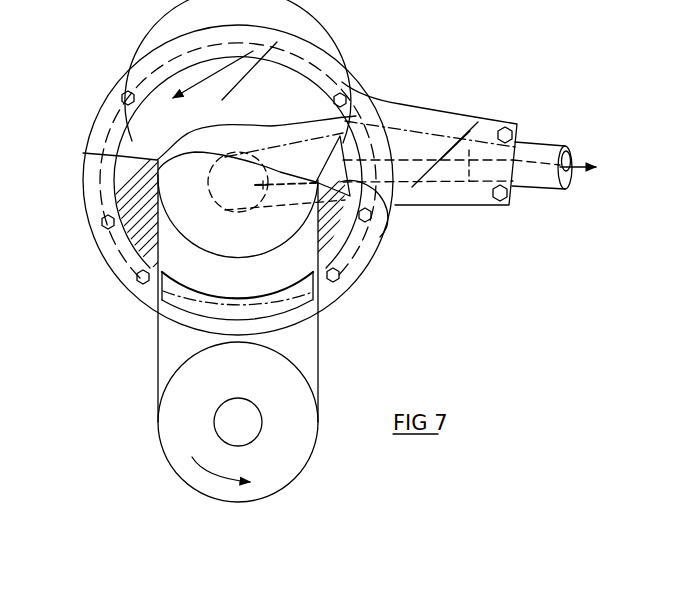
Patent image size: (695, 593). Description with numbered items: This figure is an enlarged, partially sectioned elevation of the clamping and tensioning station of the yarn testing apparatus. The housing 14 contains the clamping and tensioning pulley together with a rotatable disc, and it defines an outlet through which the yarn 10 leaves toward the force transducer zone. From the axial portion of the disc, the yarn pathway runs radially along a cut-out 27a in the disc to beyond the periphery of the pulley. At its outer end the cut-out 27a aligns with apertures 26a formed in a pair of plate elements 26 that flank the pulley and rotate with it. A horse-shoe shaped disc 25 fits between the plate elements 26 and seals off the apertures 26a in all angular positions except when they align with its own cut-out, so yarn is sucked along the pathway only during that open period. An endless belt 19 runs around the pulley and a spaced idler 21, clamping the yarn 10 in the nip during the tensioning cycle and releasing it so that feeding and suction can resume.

The housing 14 is at (186, 36).
The cut-out 27a is at (260, 177).
The plate elements 26 is at (118, 160).
The apertures 26a is at (342, 180).
The horse-shoe shaped disc 25 is at (340, 238).
The belt 19 is at (320, 353).
The idler 21 is at (293, 453).
The yarn 10 is at (571, 172).